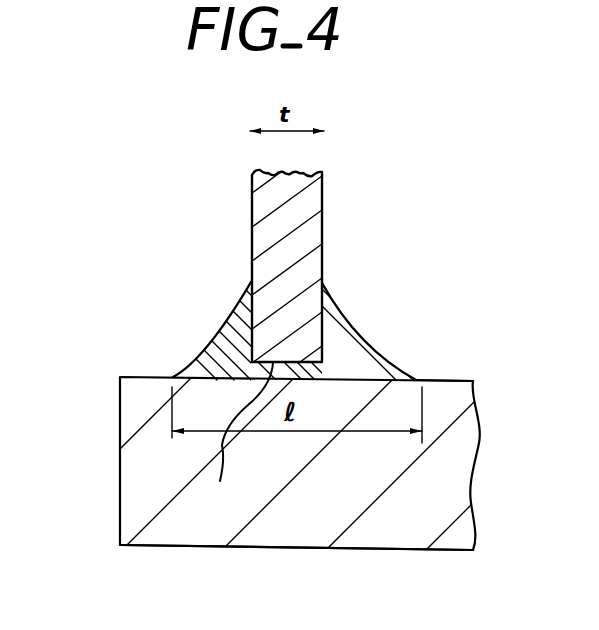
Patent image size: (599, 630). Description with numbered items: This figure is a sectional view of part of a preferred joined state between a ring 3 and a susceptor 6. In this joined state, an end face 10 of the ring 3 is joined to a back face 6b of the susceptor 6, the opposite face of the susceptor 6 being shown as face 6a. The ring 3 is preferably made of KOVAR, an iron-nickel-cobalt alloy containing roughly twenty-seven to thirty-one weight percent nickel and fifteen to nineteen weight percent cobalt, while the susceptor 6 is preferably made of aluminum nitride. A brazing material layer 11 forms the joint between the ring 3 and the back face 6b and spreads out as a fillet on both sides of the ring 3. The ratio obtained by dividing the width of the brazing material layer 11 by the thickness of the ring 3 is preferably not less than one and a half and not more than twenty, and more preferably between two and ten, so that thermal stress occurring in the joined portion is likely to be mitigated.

The ring 3 is at (313, 215).
The susceptor 6 is at (125, 432).
The bottom surface of base block 6a is at (165, 546).
The back face of the susceptor 6b is at (457, 380).
The end face of the ring 10 is at (234, 439).
The brazing material layer 11 is at (222, 338).